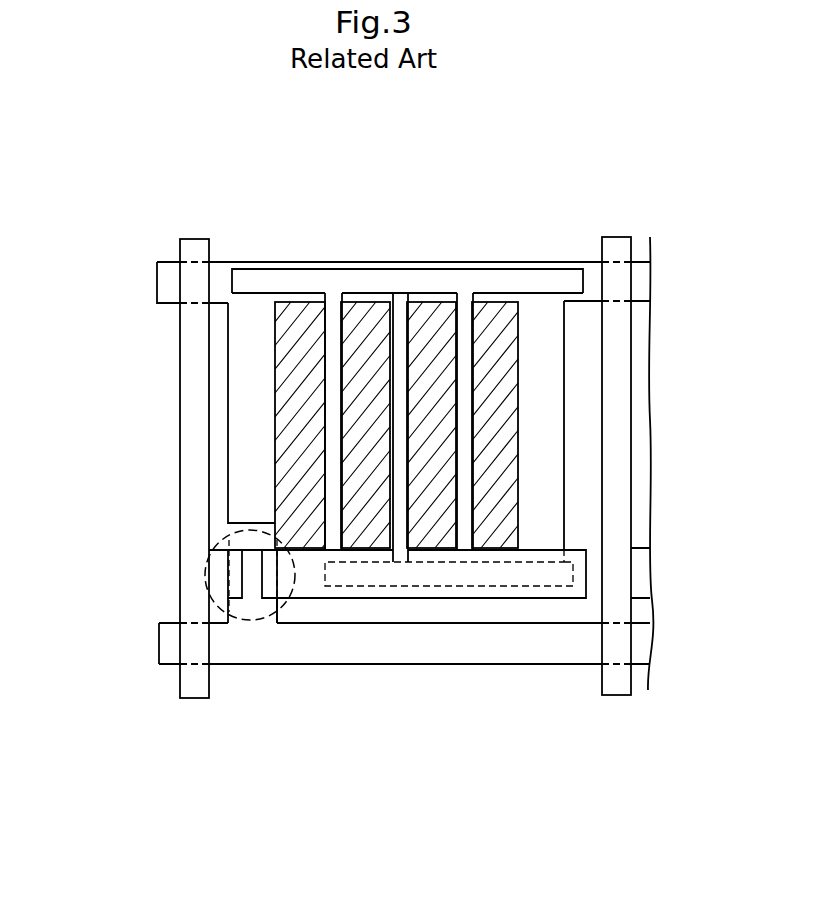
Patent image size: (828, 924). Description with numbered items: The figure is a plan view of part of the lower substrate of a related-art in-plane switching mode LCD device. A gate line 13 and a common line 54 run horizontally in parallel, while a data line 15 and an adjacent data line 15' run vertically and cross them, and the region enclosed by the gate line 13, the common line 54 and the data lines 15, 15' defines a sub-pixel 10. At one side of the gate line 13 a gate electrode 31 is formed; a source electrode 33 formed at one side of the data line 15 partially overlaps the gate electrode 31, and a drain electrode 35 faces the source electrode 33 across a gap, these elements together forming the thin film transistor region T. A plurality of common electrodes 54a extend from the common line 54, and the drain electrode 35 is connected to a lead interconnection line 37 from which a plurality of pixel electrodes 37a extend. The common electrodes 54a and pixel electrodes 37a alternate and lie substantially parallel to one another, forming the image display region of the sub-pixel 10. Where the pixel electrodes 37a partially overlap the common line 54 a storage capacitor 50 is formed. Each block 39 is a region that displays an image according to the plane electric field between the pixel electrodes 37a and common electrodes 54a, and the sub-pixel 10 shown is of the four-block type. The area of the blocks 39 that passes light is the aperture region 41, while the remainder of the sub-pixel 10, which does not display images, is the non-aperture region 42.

The sub-pixel 10 is at (140, 245).
The gate line 13 is at (483, 648).
The data line 15 is at (148, 468).
The data line 15' is at (627, 506).
The gate electrode 31 is at (235, 542).
The source electrode 33 is at (223, 590).
The drain electrode 35 is at (266, 590).
The lead interconnection line 37 is at (362, 598).
The pixel electrode 37a is at (330, 390).
The block 39 is at (497, 313).
The aperture region 41 is at (513, 187).
The non-aperture region 42 is at (524, 222).
The storage capacitor 50 is at (543, 272).
The common line 54 is at (167, 281).
The common electrode 54a is at (242, 365).
The thin film transistor region T is at (207, 572).